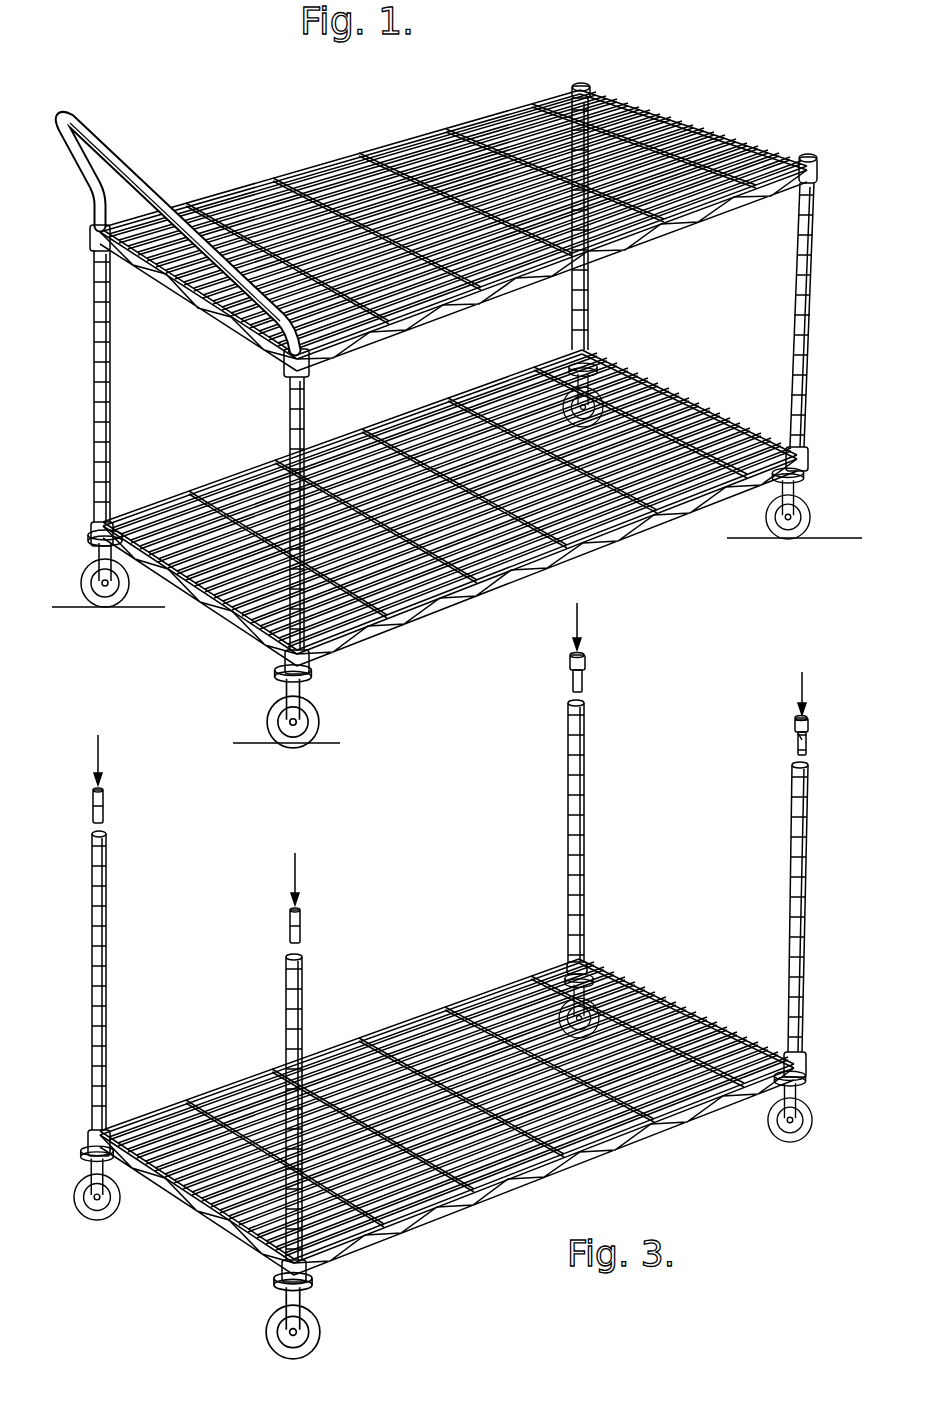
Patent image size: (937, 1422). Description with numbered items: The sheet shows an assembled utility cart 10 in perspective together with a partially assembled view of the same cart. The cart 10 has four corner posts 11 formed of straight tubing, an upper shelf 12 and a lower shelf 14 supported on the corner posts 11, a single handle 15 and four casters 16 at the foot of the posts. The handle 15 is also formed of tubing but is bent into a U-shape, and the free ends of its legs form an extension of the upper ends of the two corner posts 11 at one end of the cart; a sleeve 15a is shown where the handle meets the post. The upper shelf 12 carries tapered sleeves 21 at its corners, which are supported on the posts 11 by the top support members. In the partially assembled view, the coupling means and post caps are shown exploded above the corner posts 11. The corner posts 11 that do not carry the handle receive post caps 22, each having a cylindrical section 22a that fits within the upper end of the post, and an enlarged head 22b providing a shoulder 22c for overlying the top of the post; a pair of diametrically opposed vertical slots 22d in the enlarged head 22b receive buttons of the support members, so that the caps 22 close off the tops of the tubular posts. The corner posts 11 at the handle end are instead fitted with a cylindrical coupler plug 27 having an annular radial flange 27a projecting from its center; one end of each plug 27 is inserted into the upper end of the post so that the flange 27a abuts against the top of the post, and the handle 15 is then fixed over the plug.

In FIG. 1, the utility cart 10 is at (322, 150).
In FIG. 1, the corner posts 11 is at (588, 308).
In FIG. 3, the corner posts 11 is at (108, 948).
In FIG. 1, the upper shelf 12 is at (660, 110).
In FIG. 1, the lower shelf 14 is at (463, 607).
In FIG. 1, the handle 15 is at (113, 152).
In FIG. 1, the handle sleeve 15a is at (92, 210).
In FIG. 1, the casters 16 is at (808, 514).
In FIG. 1, the tapered sleeves 21 is at (820, 170).
In FIG. 3, the post caps 22 is at (590, 665).
In FIG. 3, the cylindrical section 22a is at (808, 750).
In FIG. 3, the enlarged head 22b is at (800, 718).
In FIG. 3, the shoulder 22c is at (810, 736).
In FIG. 3, the vertical slots 22d is at (795, 735).
In FIG. 3, the coupler plug 27 is at (103, 793).
In FIG. 3, the annular radial flange 27a is at (104, 808).